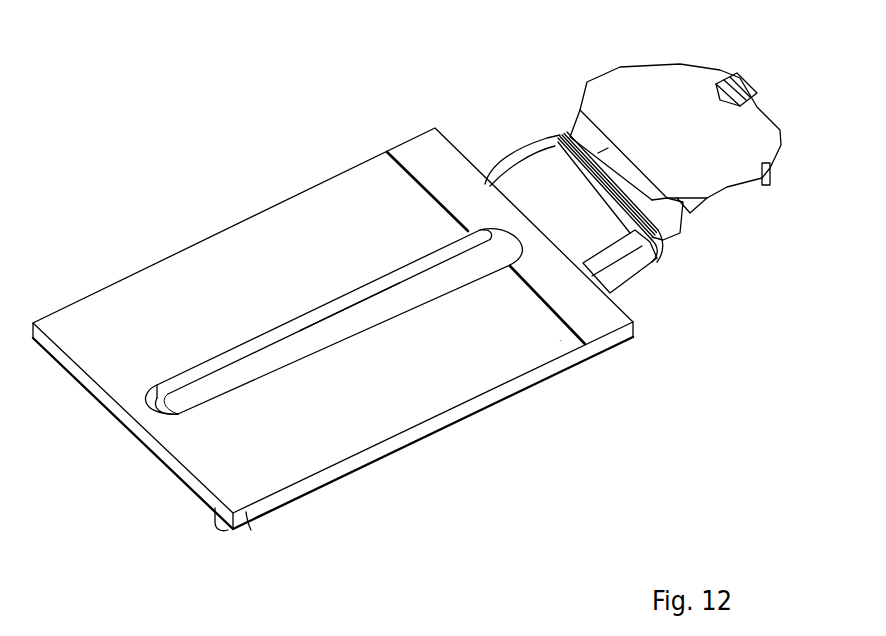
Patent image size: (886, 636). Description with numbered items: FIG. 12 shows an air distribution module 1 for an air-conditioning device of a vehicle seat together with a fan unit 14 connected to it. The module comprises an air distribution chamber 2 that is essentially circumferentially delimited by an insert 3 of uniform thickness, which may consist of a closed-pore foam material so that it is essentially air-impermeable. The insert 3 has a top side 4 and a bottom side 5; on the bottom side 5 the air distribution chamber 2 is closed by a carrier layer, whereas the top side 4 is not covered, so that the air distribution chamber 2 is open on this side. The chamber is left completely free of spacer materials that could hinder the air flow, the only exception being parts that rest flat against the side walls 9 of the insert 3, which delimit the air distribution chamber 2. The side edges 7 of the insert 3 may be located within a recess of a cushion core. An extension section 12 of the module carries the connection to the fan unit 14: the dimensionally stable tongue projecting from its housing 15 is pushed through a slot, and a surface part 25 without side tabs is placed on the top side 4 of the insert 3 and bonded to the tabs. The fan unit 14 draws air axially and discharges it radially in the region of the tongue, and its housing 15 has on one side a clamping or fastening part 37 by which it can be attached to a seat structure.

The air distribution module 1 is at (106, 266).
The air distribution chamber 2 is at (202, 395).
The insert 3 is at (365, 192).
The top side 4 is at (424, 247).
The bottom side 5 is at (415, 288).
The side edges 7 is at (216, 508).
The side walls 9 is at (223, 362).
The extension section 12 is at (590, 313).
The fan unit 14 is at (563, 83).
The housing 15 is at (737, 192).
The surface part 25 is at (600, 237).
The clamping or fastening part 37 is at (755, 90).